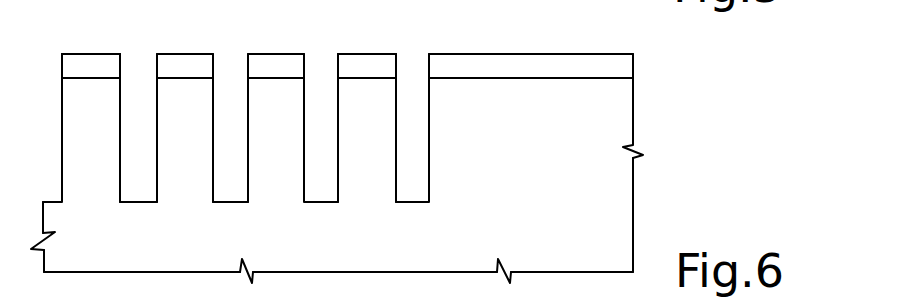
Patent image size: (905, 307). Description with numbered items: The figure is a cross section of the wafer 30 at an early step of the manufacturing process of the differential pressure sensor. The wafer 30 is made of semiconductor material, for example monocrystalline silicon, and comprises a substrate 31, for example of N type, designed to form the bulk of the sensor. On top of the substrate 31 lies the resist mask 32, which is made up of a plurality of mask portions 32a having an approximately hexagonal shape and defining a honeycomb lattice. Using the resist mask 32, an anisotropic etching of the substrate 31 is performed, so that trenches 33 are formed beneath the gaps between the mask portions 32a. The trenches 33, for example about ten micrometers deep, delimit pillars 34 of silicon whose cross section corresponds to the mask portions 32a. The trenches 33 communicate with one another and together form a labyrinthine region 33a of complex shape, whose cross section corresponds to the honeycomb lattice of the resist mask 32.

The wafer 30 is at (651, 157).
The substrate 31 is at (615, 235).
The resist mask 32 is at (635, 62).
The mask portions 32a is at (93, 63).
The trenches 33 is at (155, 130).
The labyrinthine region 33a is at (228, 100).
The pillars 34 is at (357, 113).